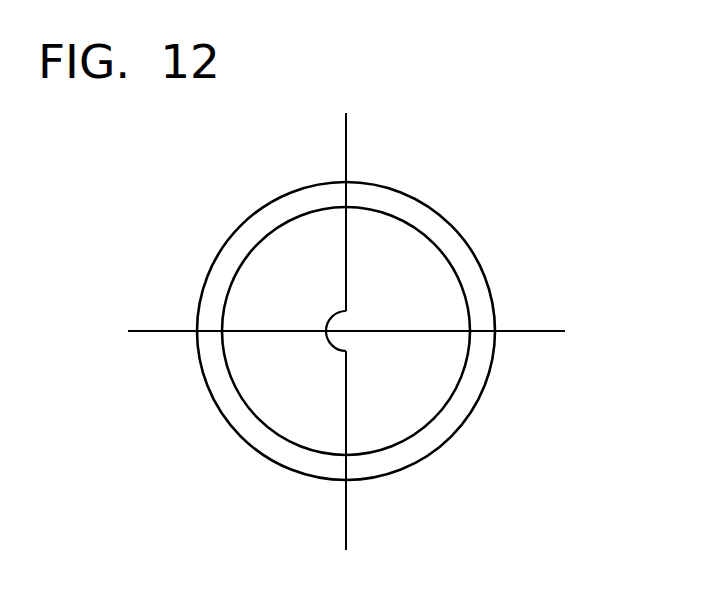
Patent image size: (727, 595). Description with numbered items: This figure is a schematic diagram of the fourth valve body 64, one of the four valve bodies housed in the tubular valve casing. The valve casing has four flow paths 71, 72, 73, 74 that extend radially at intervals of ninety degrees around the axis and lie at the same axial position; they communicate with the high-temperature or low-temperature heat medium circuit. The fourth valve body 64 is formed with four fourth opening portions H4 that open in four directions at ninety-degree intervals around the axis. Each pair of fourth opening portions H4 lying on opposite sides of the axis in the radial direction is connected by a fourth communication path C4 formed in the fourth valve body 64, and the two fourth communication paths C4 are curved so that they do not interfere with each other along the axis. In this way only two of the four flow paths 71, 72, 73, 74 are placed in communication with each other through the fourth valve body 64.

The fourth valve body 64 is at (420, 268).
The fourth opening portion H4 is at (346, 206).
The fourth communication path C4 is at (346, 283).
The flow path 71 is at (347, 133).
The flow path 72 is at (347, 535).
The flow path 73 is at (548, 333).
The flow path 74 is at (138, 334).